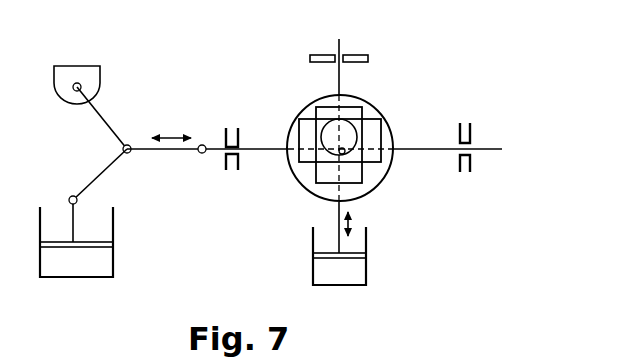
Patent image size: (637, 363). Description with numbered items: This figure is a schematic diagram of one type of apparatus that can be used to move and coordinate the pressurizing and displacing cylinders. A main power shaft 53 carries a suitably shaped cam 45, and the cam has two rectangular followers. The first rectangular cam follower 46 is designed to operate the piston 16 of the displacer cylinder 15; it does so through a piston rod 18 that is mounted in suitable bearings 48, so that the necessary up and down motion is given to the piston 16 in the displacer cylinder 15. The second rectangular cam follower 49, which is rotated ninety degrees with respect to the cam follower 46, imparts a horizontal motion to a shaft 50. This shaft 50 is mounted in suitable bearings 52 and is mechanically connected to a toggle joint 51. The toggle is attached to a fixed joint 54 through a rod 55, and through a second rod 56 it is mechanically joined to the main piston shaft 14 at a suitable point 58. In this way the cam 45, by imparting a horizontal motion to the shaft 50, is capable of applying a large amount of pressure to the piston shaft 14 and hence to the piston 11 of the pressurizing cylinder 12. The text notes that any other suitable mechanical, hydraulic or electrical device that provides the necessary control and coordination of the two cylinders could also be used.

The piston 11 is at (85, 243).
The pressurizing cylinder 12 is at (98, 263).
The main piston shaft 14 is at (75, 222).
The displacer cylinder 15 is at (325, 276).
The piston 16 is at (333, 252).
The piston rod 18 is at (337, 228).
The cam 45 is at (333, 135).
The rectangular cam follower 46 is at (381, 135).
The bearings 48 is at (347, 57).
The rectangular cam follower 49 is at (363, 110).
The shaft 50 is at (248, 148).
The toggle joint 51 is at (130, 154).
The bearings 52 is at (232, 171).
The main power shaft 53 is at (344, 153).
The fixed joint 54 is at (97, 80).
The rod 55 is at (106, 120).
The rod 56 is at (100, 177).
The point 58 is at (70, 196).